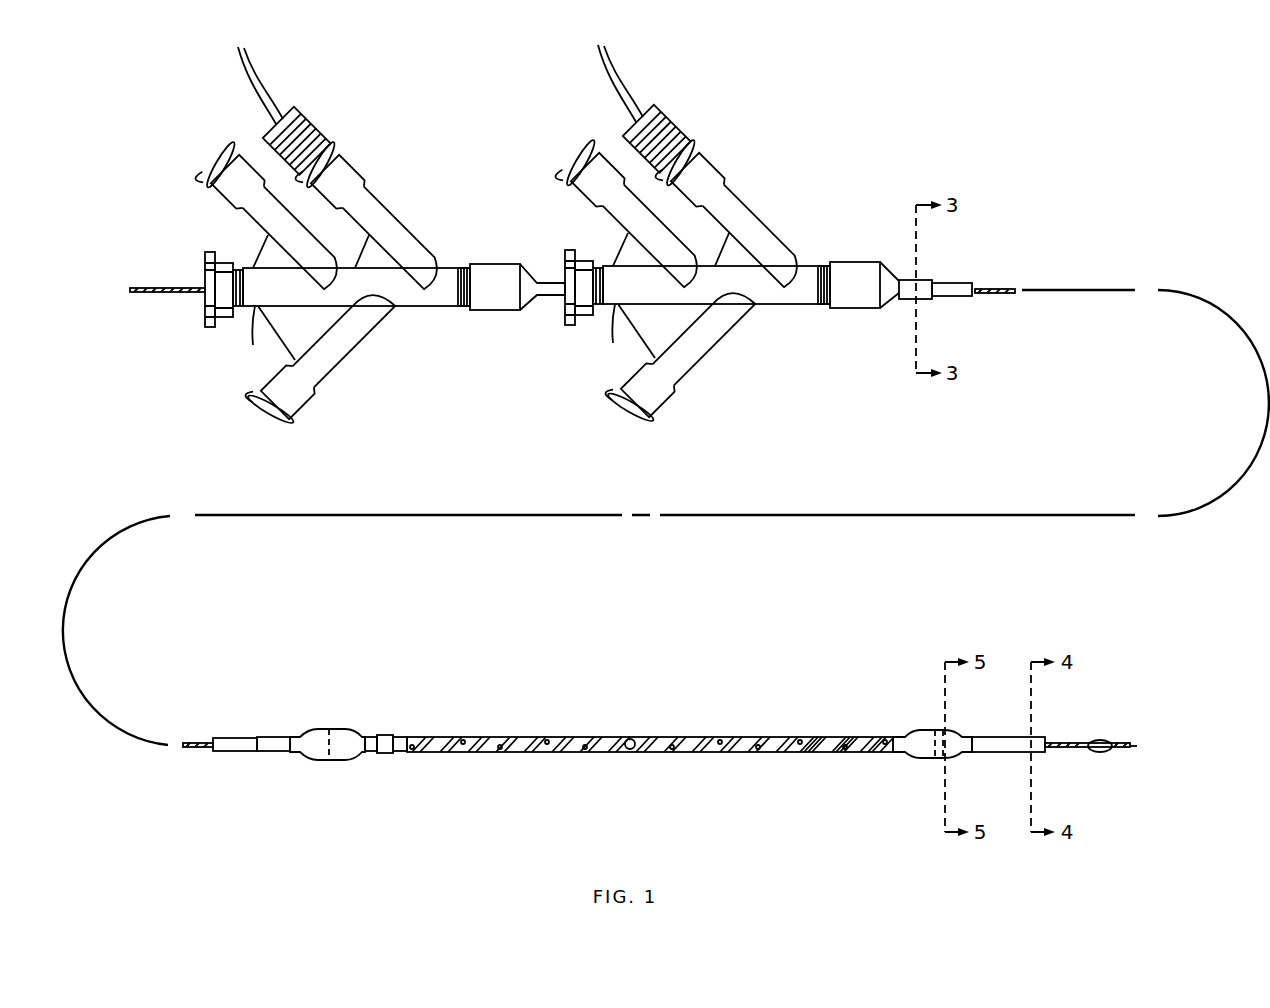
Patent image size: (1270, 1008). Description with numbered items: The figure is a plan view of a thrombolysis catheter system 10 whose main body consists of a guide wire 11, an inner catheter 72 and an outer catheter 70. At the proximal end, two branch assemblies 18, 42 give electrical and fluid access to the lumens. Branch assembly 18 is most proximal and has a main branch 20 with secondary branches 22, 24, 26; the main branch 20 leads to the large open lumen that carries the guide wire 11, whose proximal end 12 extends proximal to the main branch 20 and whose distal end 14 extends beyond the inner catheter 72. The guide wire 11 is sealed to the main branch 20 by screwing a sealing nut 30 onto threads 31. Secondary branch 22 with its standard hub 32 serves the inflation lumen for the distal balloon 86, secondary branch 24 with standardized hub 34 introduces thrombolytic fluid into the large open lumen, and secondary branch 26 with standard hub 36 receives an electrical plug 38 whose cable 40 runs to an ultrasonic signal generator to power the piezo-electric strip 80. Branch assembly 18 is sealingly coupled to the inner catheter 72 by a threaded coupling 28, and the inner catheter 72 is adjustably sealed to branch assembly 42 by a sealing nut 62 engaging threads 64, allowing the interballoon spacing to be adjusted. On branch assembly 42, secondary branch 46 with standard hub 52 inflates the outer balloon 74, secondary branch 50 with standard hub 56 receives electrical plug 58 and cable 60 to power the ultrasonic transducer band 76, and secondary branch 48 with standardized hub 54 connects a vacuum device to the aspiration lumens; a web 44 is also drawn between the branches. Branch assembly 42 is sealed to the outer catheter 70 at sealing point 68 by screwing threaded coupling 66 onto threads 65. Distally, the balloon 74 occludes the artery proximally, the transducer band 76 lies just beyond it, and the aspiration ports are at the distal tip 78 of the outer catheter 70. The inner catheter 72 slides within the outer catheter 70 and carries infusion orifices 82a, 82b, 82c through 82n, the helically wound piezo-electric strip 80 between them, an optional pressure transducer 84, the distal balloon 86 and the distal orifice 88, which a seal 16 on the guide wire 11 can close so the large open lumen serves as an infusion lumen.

The thrombolysis catheter system 10 is at (1036, 143).
The guide wire 11 is at (162, 287).
The proximal end 12 is at (130, 291).
The distal end 14 is at (1136, 746).
The seal 16 is at (1104, 741).
The branch assembly 18 is at (437, 308).
The main branch 20 is at (246, 312).
The secondary branch 22 is at (353, 350).
The secondary branch 24 is at (262, 229).
The secondary branch 26 is at (411, 232).
The threaded coupling 28 is at (493, 263).
The sealing nut 30 is at (210, 327).
The threads 31 is at (224, 318).
The standard hub 32 is at (303, 404).
The standardized hub 34 is at (213, 177).
The standard hub 36 is at (350, 163).
The electrical plug 38 is at (327, 115).
The cable 40 is at (266, 108).
The branch assembly 42 is at (803, 306).
The web 44 is at (645, 332).
The secondary branch 46 is at (704, 355).
The secondary branch 48 is at (621, 226).
The secondary branch 50 is at (762, 223).
The standard hub 52 is at (673, 405).
The standardized hub 54 is at (594, 155).
The standard hub 56 is at (710, 170).
The electrical plug 58 is at (680, 120).
The cable 60 is at (626, 103).
The sealing nut 62 is at (567, 326).
The threads 64 is at (596, 316).
The threads 65 is at (820, 266).
The threaded coupling 66 is at (858, 309).
The sealing point 68 is at (891, 298).
The outer catheter 70 is at (907, 279).
The inner catheter 72 is at (960, 283).
The balloon 74 is at (317, 729).
The ultrasonic transducer band 76 is at (387, 754).
The distal tip 78 is at (400, 737).
The piezo-electric strip 80 is at (547, 753).
The orifice 82n is at (411, 747).
The orifice 82a is at (882, 753).
The orifice 82b is at (840, 753).
The orifice 82c is at (805, 753).
The pressure transducer 84 is at (632, 738).
The balloon 86 is at (930, 759).
The distal orifice 88 is at (1038, 737).